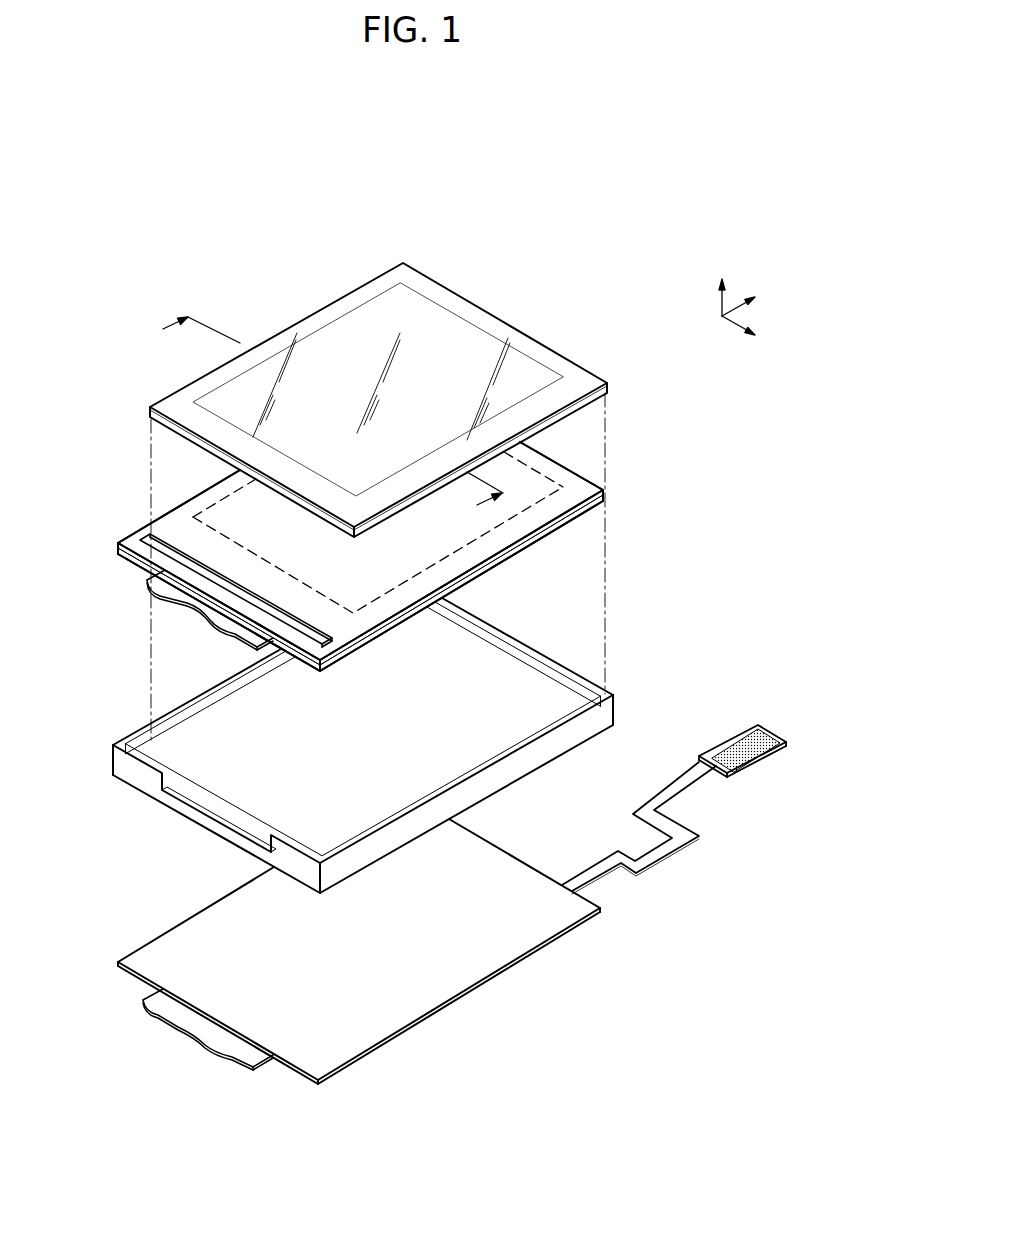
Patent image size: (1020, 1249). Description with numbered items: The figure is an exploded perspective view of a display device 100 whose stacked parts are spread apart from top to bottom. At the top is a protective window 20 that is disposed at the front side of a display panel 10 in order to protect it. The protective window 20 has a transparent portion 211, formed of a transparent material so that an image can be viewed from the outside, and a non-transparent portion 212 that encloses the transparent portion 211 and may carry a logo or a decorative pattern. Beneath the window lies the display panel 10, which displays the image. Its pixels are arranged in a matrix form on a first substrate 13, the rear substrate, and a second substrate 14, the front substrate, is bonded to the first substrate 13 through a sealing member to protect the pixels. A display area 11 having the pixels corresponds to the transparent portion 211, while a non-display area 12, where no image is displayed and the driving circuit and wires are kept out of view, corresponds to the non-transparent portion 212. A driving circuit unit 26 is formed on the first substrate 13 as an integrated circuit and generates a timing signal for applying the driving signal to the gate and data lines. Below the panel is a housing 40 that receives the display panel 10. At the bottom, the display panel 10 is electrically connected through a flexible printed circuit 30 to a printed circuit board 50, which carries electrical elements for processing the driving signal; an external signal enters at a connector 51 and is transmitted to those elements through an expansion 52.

The display device 100 is at (354, 167).
The display panel 10 is at (378, 556).
The display area 11 is at (453, 537).
The non-display area 12 is at (545, 513).
The first substrate 13 is at (598, 505).
The second substrate 14 is at (586, 486).
The protective window 20 is at (380, 380).
The transparent portion 211 is at (420, 313).
The non-transparent portion 212 is at (493, 324).
The driving circuit unit 26 is at (149, 537).
The flexible printed circuit 30 is at (213, 610).
The housing 40 is at (587, 669).
The printed circuit board 50 is at (485, 962).
The connector 51 is at (745, 743).
The expansion 52 is at (692, 835).